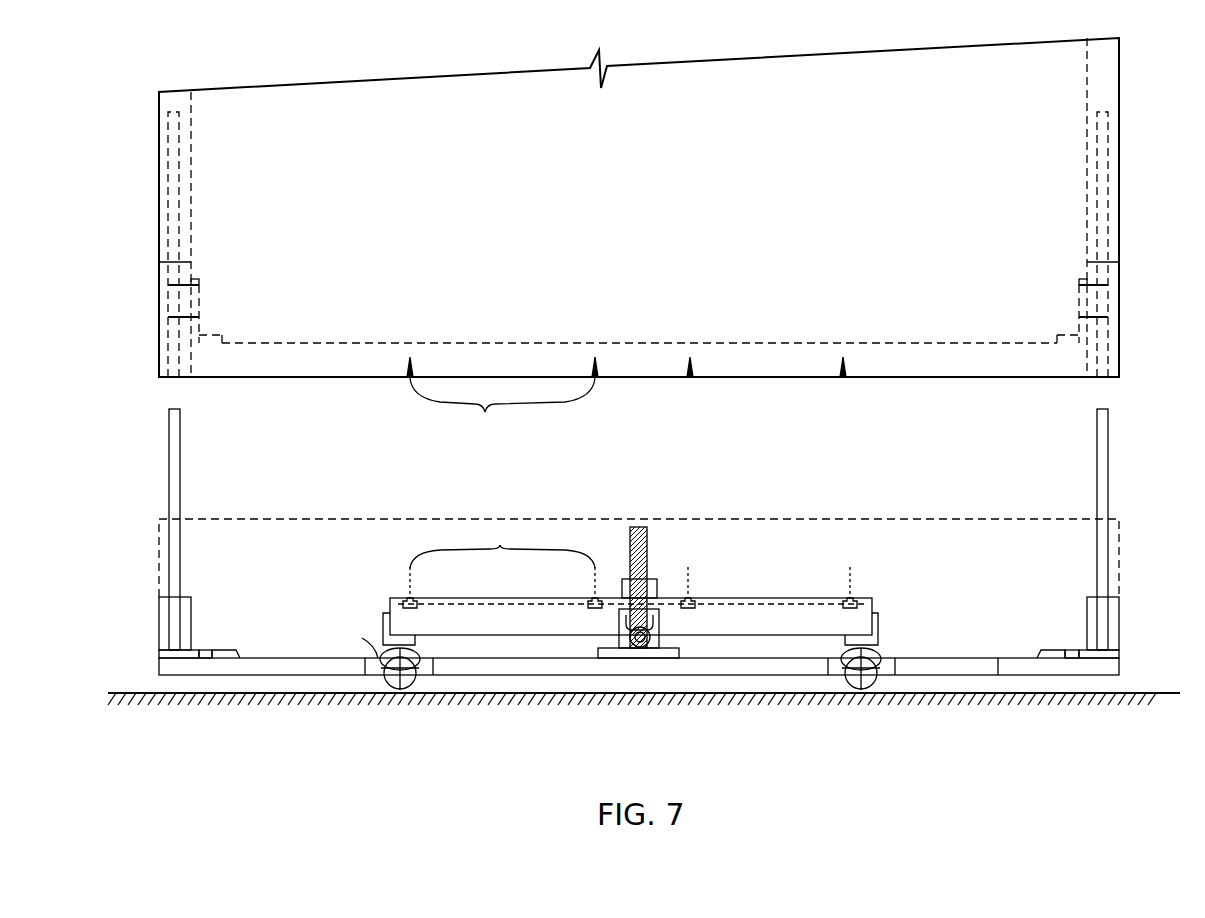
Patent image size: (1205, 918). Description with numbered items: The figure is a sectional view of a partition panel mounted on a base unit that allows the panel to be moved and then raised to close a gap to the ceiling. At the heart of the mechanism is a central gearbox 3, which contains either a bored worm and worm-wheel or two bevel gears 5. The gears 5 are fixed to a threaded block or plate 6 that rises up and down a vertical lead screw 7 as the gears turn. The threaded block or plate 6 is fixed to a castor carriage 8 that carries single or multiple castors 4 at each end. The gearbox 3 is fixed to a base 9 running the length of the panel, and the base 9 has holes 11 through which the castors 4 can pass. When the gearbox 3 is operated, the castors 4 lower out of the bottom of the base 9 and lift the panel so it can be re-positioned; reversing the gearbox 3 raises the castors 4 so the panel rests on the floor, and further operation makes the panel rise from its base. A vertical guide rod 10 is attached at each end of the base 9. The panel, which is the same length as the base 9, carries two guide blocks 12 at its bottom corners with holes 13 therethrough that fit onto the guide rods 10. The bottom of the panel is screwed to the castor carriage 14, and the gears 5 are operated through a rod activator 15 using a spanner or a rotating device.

The gearbox 3 is at (660, 626).
The castors 4 is at (398, 690).
The gears 5 is at (629, 638).
The threaded block or plate 6 is at (653, 580).
The vertical lead screw 7 is at (650, 537).
The castor carriage 8 is at (795, 598).
The base 9 is at (968, 657).
The vertical guide rod 10 is at (181, 468).
The holes for castors 11 is at (373, 658).
The guide blocks 12 is at (190, 270).
The holes 13 is at (170, 378).
The castor carriage screw connection 14 is at (630, 493).
The rod activator 15 is at (641, 650).